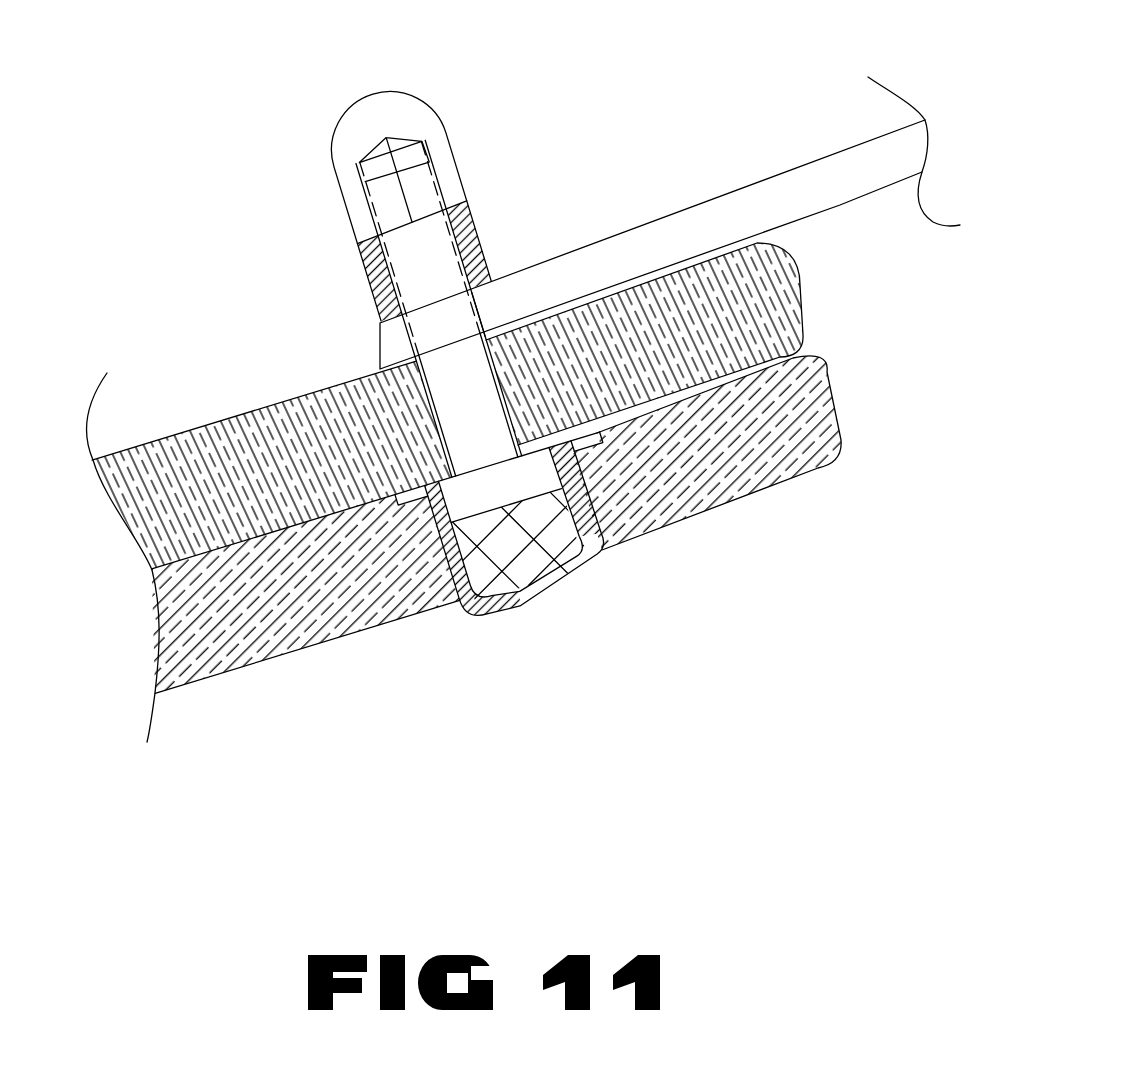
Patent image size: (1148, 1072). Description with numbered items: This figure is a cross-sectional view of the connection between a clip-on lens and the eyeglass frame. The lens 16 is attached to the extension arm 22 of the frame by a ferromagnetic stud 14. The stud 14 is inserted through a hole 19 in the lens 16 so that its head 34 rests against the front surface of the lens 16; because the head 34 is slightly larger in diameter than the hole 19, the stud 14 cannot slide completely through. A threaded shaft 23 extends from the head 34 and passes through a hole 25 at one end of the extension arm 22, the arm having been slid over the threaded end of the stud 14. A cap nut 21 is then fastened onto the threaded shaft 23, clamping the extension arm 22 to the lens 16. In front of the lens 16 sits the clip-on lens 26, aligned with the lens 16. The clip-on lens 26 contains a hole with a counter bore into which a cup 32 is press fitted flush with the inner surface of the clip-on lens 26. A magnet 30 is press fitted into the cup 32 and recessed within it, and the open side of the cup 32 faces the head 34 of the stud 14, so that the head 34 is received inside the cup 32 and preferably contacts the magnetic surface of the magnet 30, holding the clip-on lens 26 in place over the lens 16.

The ferromagnetic stud 14 is at (447, 383).
The lens 16 is at (802, 326).
The hole 19 is at (442, 424).
The cap nut 21 is at (341, 128).
The extension arm 22 is at (738, 196).
The threaded shaft 23 is at (485, 240).
The hole 25 is at (495, 318).
The clip-on lens 26 is at (408, 618).
The magnet 30 is at (610, 547).
The cup 32 is at (562, 590).
The head 34 is at (516, 484).